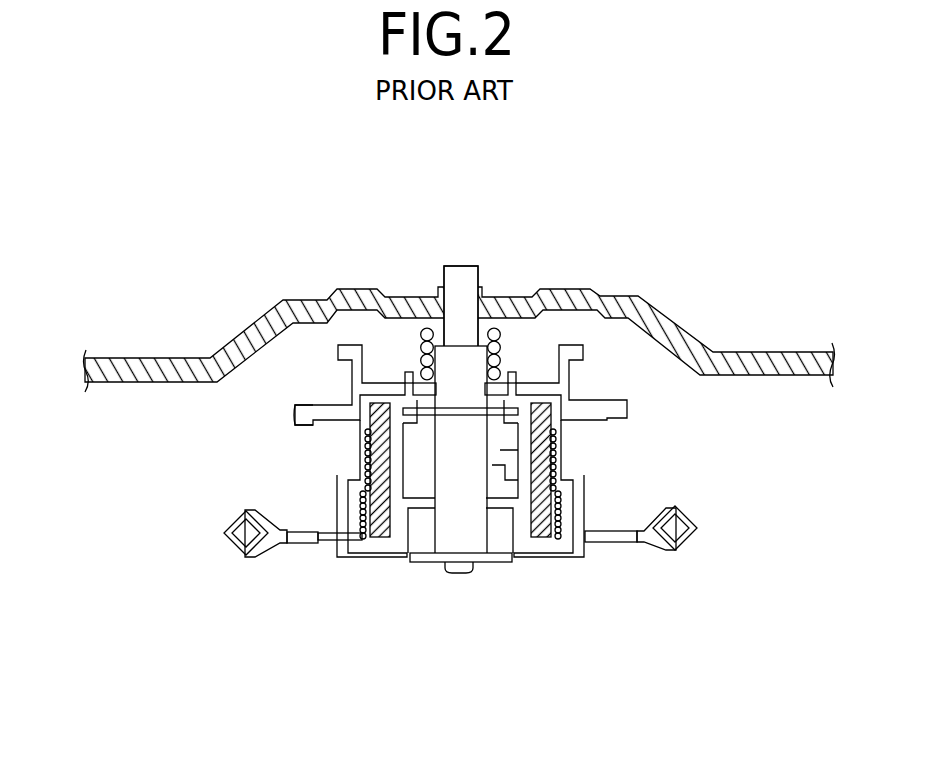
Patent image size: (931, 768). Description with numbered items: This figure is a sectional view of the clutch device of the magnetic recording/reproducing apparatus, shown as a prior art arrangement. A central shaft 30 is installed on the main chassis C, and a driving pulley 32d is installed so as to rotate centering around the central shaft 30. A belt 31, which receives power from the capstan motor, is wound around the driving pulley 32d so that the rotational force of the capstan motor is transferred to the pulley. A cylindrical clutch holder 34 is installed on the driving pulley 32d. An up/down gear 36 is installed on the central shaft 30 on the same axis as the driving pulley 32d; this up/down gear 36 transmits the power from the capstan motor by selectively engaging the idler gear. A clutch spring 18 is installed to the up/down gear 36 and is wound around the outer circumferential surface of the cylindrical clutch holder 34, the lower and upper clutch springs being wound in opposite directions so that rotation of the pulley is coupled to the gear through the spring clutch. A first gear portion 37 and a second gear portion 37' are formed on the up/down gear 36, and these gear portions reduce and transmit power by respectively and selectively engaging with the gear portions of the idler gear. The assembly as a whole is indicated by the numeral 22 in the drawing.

The main chassis C is at (133, 364).
The central shaft 30 is at (463, 544).
The clutch assembly 22 is at (246, 475).
The second gear portion 37' is at (326, 385).
The first gear portion 37 is at (272, 421).
The up/down gear 36 is at (602, 400).
The cylindrical clutch holder 34 is at (565, 468).
The clutch spring 18 is at (565, 448).
The driving pulley 32d is at (623, 553).
The belt 31 is at (698, 529).